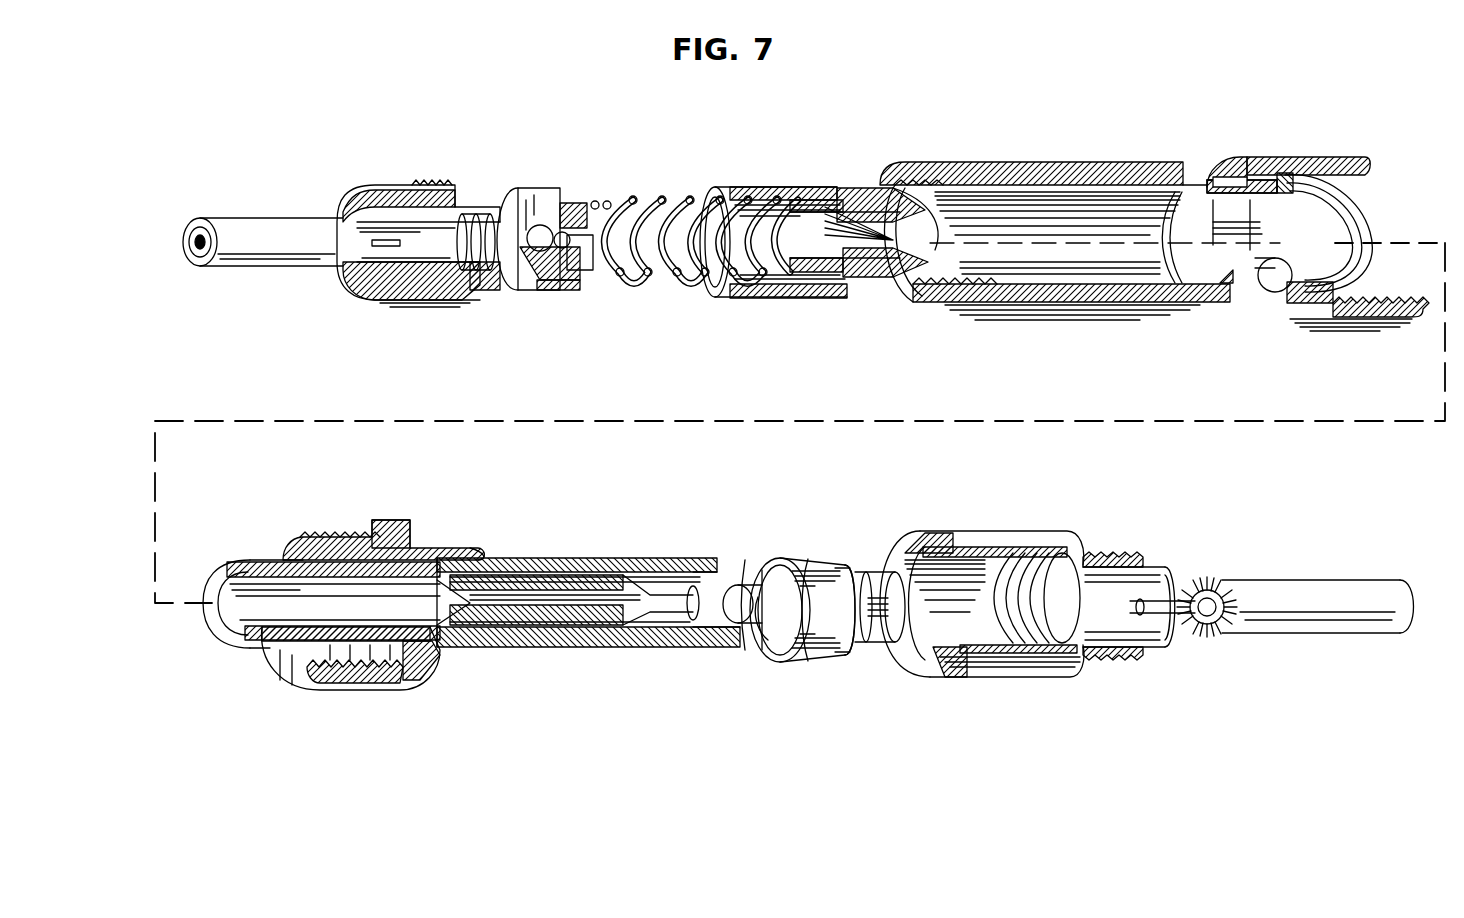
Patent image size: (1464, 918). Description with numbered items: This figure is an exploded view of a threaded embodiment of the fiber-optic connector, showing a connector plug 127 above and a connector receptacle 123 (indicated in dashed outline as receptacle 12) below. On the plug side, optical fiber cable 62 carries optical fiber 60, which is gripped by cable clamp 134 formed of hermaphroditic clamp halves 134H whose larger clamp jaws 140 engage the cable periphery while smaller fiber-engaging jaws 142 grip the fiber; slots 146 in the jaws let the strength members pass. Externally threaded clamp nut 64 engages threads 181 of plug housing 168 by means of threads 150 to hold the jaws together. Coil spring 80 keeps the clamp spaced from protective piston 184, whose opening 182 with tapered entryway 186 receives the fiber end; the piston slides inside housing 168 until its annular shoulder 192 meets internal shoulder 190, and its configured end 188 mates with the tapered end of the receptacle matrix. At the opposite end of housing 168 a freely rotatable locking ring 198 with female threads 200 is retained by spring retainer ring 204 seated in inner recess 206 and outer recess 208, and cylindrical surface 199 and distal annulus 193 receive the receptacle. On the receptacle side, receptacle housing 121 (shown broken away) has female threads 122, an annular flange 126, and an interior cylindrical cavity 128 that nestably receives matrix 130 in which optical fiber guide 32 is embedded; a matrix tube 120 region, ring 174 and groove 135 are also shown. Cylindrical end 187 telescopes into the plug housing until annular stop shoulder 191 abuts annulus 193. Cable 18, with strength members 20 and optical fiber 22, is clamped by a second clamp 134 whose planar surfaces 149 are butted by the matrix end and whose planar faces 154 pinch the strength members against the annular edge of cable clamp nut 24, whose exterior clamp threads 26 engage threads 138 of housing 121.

The connector plug 127 is at (833, 95).
The optical fiber cable 62 is at (262, 218).
The optical fiber 60 is at (427, 183).
The externally threaded clamp nut 64 is at (400, 305).
The threads / annular edge 150 is at (400, 240).
The slots 146 is at (507, 298).
The clamp jaws 140 is at (487, 280).
The cable clamp 134 is at (548, 178).
The hermaphroditic clamp halves 134H is at (498, 273).
The fiber-engaging jaws 142 is at (580, 205).
The coil spring 80 is at (690, 200).
The tapered entryway 186 is at (852, 272).
The protective piston 184 is at (858, 308).
The opening / aperture 182 is at (920, 270).
The annular shoulder 192 is at (868, 192).
The configured piston end 188 is at (905, 240).
The plug housing 168 is at (962, 152).
The threads 181 is at (972, 290).
The annular shoulder / tapered end 190 is at (1172, 245).
The cylindrical surface 199 is at (1215, 228).
The outer recess 208 is at (1230, 160).
The locking ring 198 is at (1313, 156).
The inner recess 206 is at (1275, 176).
The female threads 200 is at (1312, 222).
The distal annulus 193 is at (1280, 280).
The spring retainer ring 204 is at (1313, 297).
The connector receptacle 12 is at (348, 419).
The cylindrical end 187 is at (243, 642).
The receptacle housing 121 is at (287, 550).
The female threads 122 is at (330, 537).
The annular flange 126 is at (398, 520).
The annular stop shoulder 191 is at (298, 660).
The interior cylindrical cavity 128 is at (355, 610).
The tube 120 is at (672, 565).
The matrix 130 is at (585, 632).
The optical fiber guide 32 is at (620, 622).
The ring 174 is at (812, 560).
The planar faces 154 is at (845, 565).
The groove 135 is at (797, 648).
The planar surfaces 149 is at (775, 650).
The connector receptacle 123 is at (695, 492).
The threads 138 is at (1065, 642).
The exterior clamp threads 26 is at (1100, 556).
The cable clamp nut 24 is at (1147, 558).
The optical fiber 22 is at (1175, 597).
The strength members 20 is at (1197, 640).
The optical fiber cable 18 is at (1282, 581).